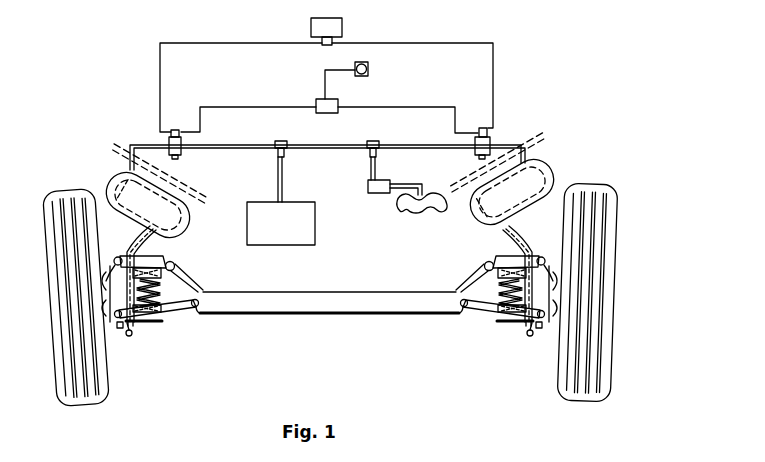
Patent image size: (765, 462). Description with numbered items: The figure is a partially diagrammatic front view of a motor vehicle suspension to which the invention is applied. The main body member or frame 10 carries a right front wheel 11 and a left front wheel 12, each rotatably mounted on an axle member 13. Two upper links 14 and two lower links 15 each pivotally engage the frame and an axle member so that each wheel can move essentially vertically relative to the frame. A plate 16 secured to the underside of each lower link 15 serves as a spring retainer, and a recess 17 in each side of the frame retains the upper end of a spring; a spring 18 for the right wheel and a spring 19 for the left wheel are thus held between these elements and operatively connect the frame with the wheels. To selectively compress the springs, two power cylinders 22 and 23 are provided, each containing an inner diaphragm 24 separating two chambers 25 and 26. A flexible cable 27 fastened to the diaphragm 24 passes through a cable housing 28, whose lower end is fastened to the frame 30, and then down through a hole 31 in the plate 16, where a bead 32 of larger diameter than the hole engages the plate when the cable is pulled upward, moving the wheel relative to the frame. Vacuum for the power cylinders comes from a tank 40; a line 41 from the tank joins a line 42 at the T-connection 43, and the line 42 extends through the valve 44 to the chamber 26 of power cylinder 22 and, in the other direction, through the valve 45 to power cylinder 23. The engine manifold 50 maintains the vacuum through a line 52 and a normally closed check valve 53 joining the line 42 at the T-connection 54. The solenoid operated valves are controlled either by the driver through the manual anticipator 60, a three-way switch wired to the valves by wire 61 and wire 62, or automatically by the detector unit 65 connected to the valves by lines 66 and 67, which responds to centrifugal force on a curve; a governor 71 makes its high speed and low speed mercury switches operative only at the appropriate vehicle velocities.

The frame 10 is at (355, 323).
The right front wheel 11 is at (60, 392).
The left front wheel 12 is at (562, 374).
The axle member 13 is at (116, 294).
The upper link 14 is at (160, 257).
The lower link 15 is at (178, 310).
The plate 16 is at (149, 324).
The recess 17 is at (176, 268).
The spring 18 is at (186, 283).
The spring 19 is at (478, 282).
The power cylinder 22 is at (122, 174).
The power cylinder 23 is at (540, 168).
The inner diaphragm 24 is at (115, 186).
The chamber 25 is at (124, 205).
The chamber 26 is at (193, 192).
The flexible cable 27 is at (131, 227).
The cable housing 28 is at (128, 243).
The frame 30 is at (550, 252).
The hole 31 is at (321, 330).
The bead 32 is at (129, 336).
The tank 40 is at (248, 240).
The line 41 is at (278, 185).
The line 42 is at (218, 147).
The T-connection 43 is at (284, 143).
The valve 44 is at (181, 152).
The valve 45 is at (477, 152).
The engine manifold 50 is at (425, 212).
The line 52 is at (419, 186).
The check valve 53 is at (383, 194).
The T-connection 54 is at (376, 144).
The manual anticipator 60 is at (311, 29).
The wire 61 is at (232, 44).
The wire 62 is at (429, 44).
The detector unit 65 is at (325, 113).
The line 66 is at (225, 108).
The line 67 is at (417, 108).
The governor 71 is at (362, 77).